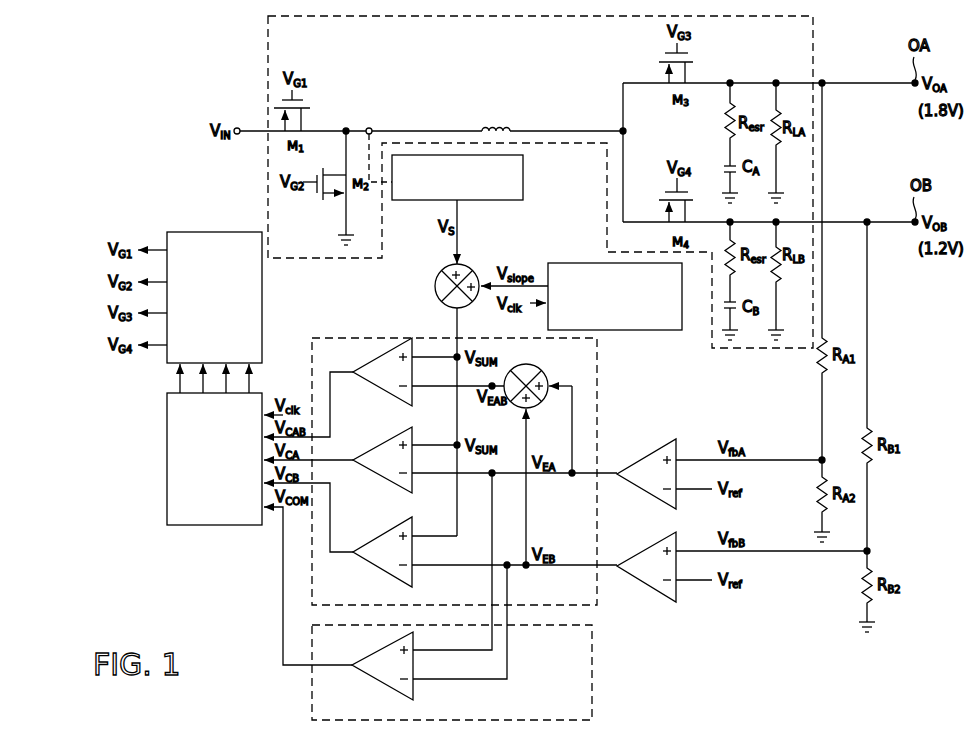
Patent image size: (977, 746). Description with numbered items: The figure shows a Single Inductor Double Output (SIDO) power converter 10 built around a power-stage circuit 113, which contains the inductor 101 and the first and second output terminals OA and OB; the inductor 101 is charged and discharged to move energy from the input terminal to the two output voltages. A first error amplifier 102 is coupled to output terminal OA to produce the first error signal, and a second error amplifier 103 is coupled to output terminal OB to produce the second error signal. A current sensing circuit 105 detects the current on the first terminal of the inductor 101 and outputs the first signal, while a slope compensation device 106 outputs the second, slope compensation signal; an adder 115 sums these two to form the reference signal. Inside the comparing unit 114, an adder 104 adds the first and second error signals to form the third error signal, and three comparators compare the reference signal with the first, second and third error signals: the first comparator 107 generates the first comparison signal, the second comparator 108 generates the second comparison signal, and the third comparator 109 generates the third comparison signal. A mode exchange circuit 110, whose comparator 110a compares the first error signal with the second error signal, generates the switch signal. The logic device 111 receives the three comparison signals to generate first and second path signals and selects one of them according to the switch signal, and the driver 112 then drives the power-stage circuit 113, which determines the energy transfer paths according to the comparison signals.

The Single Inductor Double Output (SIDO) power converter 10 is at (777, 668).
The inductor 101 is at (506, 128).
The first error amplifier 102 is at (650, 457).
The second error amplifier 103 is at (650, 548).
The adder 104 is at (541, 372).
The current sensing circuit 105 is at (523, 178).
The slope compensation device 106 is at (576, 263).
The first comparator 107 is at (385, 442).
The second comparator 108 is at (385, 534).
The third comparator 109 is at (382, 355).
The mode exchange circuit 110 is at (592, 662).
The comparator 110a is at (385, 647).
The logic device 111 is at (167, 458).
The driver 112 is at (215, 232).
The power-stage circuit 113 is at (813, 38).
The comparing unit 114 is at (597, 396).
The adder 115 is at (472, 270).